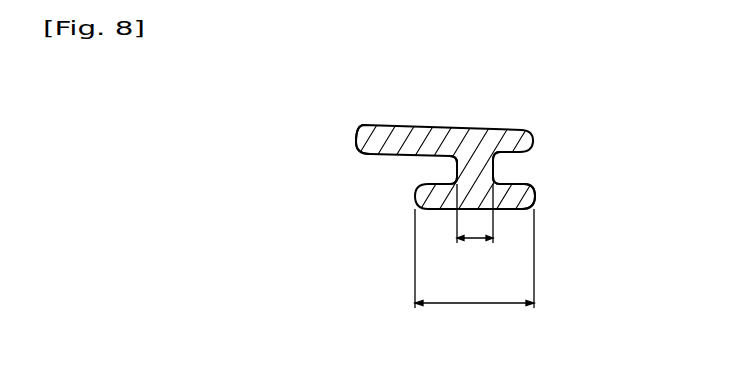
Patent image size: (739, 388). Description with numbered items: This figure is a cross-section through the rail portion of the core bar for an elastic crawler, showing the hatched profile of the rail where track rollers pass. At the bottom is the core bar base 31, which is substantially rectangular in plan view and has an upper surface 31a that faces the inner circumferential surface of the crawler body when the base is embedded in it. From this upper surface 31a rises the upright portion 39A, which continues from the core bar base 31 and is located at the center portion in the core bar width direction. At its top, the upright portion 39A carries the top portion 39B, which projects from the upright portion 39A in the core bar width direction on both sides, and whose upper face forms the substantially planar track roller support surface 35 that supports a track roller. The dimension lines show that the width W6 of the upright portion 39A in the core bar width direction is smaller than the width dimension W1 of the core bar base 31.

The track roller support surface 35 is at (470, 127).
The top portion 39B is at (356, 132).
The upright portion 39A is at (455, 166).
The upper surface 31a is at (513, 165).
The core bar base 31 is at (537, 193).
The width dimension of the upright portion W6 is at (474, 243).
The width dimension of the core bar base W1 is at (474, 307).